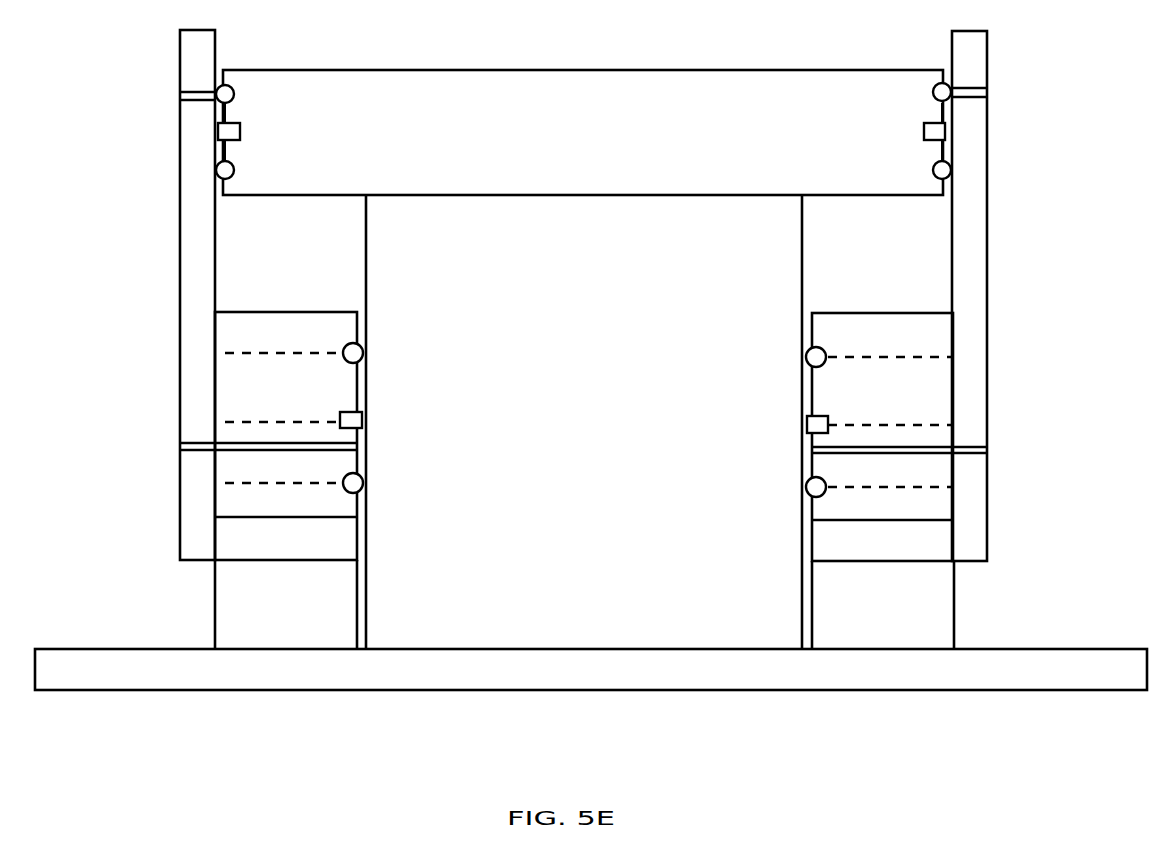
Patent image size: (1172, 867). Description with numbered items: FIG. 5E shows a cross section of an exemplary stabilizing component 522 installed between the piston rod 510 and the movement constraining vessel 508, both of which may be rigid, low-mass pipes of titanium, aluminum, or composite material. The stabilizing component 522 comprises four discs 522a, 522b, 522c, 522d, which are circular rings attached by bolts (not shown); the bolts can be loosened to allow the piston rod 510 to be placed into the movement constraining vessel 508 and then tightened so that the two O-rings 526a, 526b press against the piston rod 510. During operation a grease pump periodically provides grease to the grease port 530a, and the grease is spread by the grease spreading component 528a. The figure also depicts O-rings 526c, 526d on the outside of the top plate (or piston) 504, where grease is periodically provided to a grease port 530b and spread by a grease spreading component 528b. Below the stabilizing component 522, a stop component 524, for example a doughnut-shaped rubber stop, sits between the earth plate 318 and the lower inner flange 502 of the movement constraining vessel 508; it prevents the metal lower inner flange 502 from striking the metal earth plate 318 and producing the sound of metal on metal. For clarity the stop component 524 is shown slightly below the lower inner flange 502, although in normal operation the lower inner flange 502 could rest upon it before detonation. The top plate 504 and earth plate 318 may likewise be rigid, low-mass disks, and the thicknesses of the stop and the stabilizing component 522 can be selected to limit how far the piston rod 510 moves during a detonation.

The earth plate 318 is at (455, 665).
The lower inner flange 502 is at (340, 550).
The top plate 504 is at (342, 90).
The movement constraining vessel 508 is at (193, 208).
The piston rod 510 is at (778, 312).
The stabilizing component 522 is at (548, 385).
The disc 522a is at (223, 333).
The disc 522b is at (223, 392).
The disc 522c is at (225, 458).
The disc 522d is at (215, 513).
The stop component 524 is at (335, 617).
The O-ring 526a is at (363, 353).
The O-ring 526b is at (363, 480).
The O-ring 526c is at (235, 94).
The O-ring 526d is at (235, 172).
The grease spreading component 528a is at (362, 420).
The grease spreading component 528b is at (218, 130).
The grease port 530a is at (238, 443).
The grease port 530b is at (190, 92).